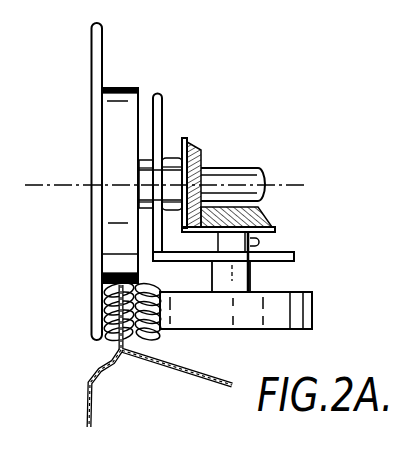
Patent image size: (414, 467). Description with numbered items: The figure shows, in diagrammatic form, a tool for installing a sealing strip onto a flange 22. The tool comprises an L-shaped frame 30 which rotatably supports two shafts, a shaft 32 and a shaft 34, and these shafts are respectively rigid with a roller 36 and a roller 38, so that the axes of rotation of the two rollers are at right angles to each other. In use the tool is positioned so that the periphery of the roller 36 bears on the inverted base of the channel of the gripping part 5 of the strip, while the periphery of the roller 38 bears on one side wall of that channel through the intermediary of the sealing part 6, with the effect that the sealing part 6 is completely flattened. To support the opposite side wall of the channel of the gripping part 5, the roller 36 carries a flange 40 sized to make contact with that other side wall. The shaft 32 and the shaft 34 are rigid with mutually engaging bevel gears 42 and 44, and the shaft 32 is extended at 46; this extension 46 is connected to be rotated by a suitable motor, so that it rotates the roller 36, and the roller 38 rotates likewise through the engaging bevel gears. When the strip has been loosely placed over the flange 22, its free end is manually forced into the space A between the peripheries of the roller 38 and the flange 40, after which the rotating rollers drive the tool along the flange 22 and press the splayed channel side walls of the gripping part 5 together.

The flange 40 is at (96, 47).
The roller 36 is at (127, 89).
The L-shaped frame 30 is at (160, 101).
The shaft 32 is at (137, 170).
The bevel gear 42 is at (199, 157).
The bevel gear 44 is at (274, 221).
The shaft extension 46 is at (254, 178).
The shaft 34 is at (250, 283).
The roller 38 is at (293, 307).
The gripping part 5 is at (108, 300).
The sealing part 6 is at (150, 337).
The flange 22 is at (93, 384).
The space A is at (108, 348).